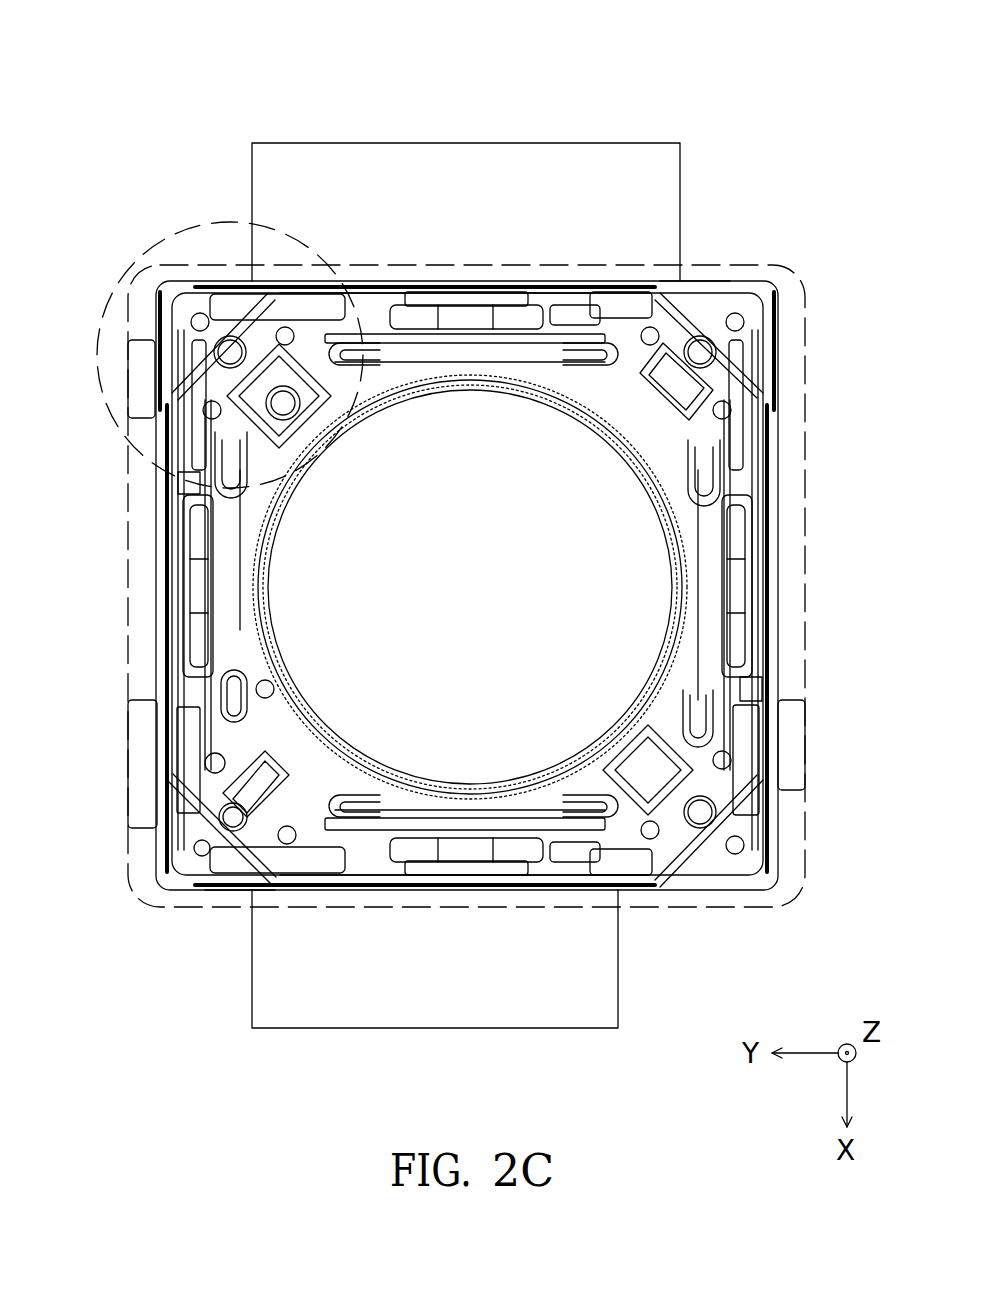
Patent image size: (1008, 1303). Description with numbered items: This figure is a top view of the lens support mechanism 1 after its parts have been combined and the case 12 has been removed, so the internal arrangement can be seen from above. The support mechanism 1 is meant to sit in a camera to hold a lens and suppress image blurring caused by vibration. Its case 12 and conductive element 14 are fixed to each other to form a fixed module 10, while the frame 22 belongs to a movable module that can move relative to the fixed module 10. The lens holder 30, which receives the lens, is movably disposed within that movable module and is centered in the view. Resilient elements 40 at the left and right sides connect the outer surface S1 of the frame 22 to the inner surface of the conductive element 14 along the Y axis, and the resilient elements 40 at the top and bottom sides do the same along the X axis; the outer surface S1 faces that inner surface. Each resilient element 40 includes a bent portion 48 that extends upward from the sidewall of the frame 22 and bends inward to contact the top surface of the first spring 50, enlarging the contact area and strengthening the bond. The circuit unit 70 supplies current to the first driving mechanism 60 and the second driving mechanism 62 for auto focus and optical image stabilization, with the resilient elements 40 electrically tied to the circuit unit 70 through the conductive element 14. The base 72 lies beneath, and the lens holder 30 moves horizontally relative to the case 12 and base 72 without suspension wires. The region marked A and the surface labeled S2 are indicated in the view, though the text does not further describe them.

The lens support mechanism 1 is at (88, 60).
The fixed module 10 is at (208, 18).
The case 12 is at (128, 482).
The conductive element 14 is at (776, 305).
The frame 22 is at (686, 588).
The lens holder 30 is at (462, 348).
The resilient element 40 is at (726, 273).
The bent portion 48 is at (762, 689).
The first spring 50 is at (572, 323).
The first driving mechanism 60 is at (237, 585).
The second driving mechanism 62 is at (766, 379).
The circuit unit 70 is at (362, 185).
The base 72 is at (140, 788).
The detail region A is at (172, 228).
The outer surface S1 is at (373, 881).
The side surface S2 is at (725, 868).